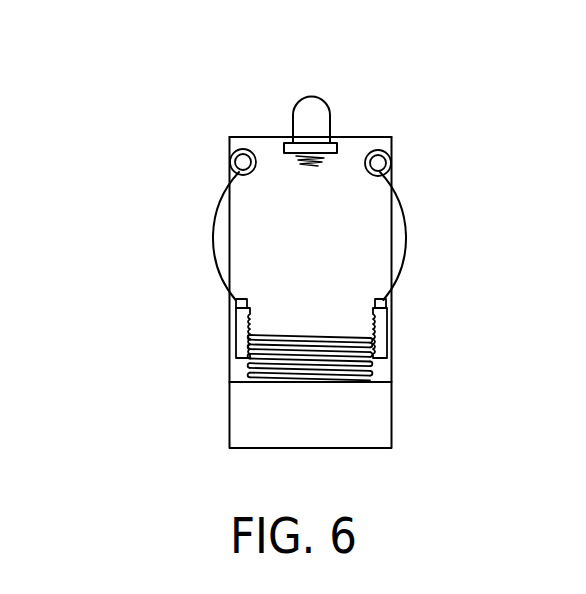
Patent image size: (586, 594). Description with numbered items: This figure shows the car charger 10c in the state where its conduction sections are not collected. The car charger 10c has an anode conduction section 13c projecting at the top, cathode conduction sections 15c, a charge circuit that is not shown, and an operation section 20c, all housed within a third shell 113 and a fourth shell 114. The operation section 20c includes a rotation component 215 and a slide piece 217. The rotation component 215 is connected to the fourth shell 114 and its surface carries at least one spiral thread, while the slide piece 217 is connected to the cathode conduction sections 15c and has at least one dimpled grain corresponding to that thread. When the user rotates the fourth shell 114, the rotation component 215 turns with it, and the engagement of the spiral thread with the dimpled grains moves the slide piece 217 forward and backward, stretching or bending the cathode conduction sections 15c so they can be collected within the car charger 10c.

The car charger 10c is at (93, 76).
The anode conduction section 13c is at (315, 112).
The third shell 113 is at (371, 137).
The cathode conduction sections 15c is at (399, 203).
The slide piece 217 is at (243, 337).
The rotation component 215 is at (372, 373).
The fourth shell 114 is at (373, 421).
The operation section 20c is at (344, 342).